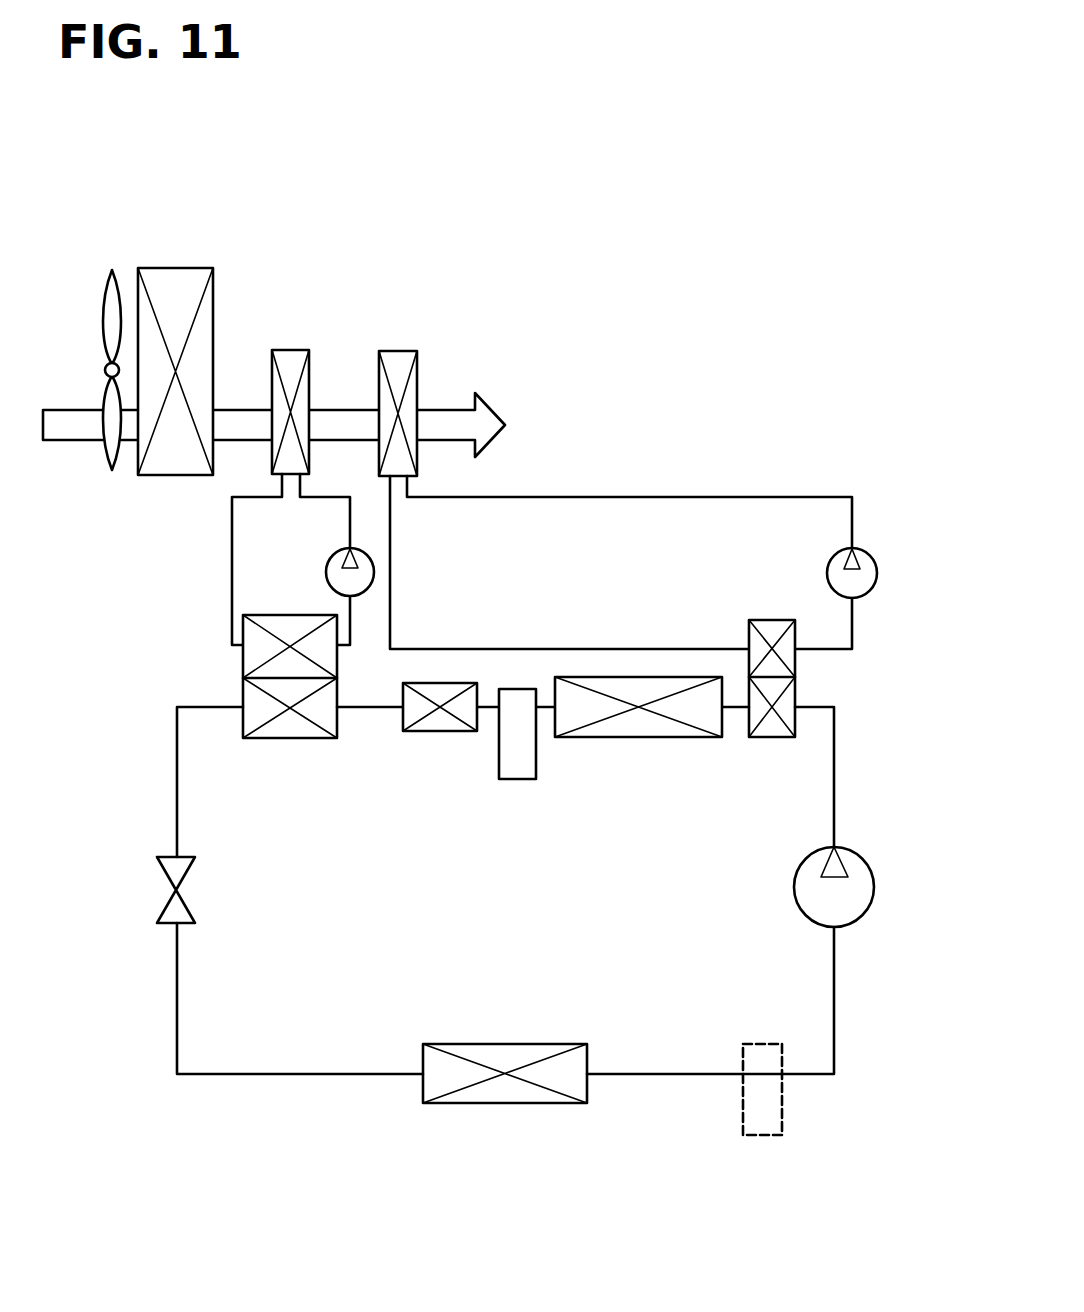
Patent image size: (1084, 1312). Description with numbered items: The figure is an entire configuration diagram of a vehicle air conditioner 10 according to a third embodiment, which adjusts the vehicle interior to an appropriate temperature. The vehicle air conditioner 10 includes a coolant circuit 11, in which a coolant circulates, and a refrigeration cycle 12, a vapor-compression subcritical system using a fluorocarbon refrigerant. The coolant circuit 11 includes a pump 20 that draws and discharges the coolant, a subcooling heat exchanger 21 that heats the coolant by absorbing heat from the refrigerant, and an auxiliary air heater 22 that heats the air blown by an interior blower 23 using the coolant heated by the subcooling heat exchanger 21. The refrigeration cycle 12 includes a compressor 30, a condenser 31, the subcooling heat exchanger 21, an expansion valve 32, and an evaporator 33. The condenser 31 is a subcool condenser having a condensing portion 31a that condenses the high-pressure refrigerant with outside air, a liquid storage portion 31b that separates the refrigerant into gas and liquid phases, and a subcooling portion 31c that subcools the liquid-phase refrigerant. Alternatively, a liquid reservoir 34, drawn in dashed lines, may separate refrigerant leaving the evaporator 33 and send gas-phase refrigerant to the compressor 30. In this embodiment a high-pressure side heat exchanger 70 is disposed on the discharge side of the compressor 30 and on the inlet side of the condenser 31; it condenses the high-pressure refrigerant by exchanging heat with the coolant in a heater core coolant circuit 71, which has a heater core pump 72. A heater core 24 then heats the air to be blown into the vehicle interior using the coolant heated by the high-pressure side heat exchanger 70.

The vehicle air conditioner 10 is at (460, 277).
The coolant circuit 11 is at (232, 575).
The refrigeration cycle 12 is at (177, 758).
The pump 20 is at (326, 572).
The subcooling heat exchanger 21 is at (243, 678).
The auxiliary air heater 22 is at (288, 350).
The interior blower 23 is at (102, 268).
The heater core 24 is at (394, 351).
The compressor 30 is at (877, 883).
The condenser 31 is at (643, 836).
The condensing portion 31a is at (612, 737).
The liquid storage portion 31b is at (517, 779).
The subcooling portion 31c is at (440, 731).
The expansion valve 32 is at (160, 875).
The evaporator 33 is at (176, 268).
The liquid reservoir 34 is at (760, 1135).
The high-pressure side heat exchanger 70 is at (795, 677).
The heater core coolant circuit 71 is at (692, 497).
The heater core pump 72 is at (877, 573).